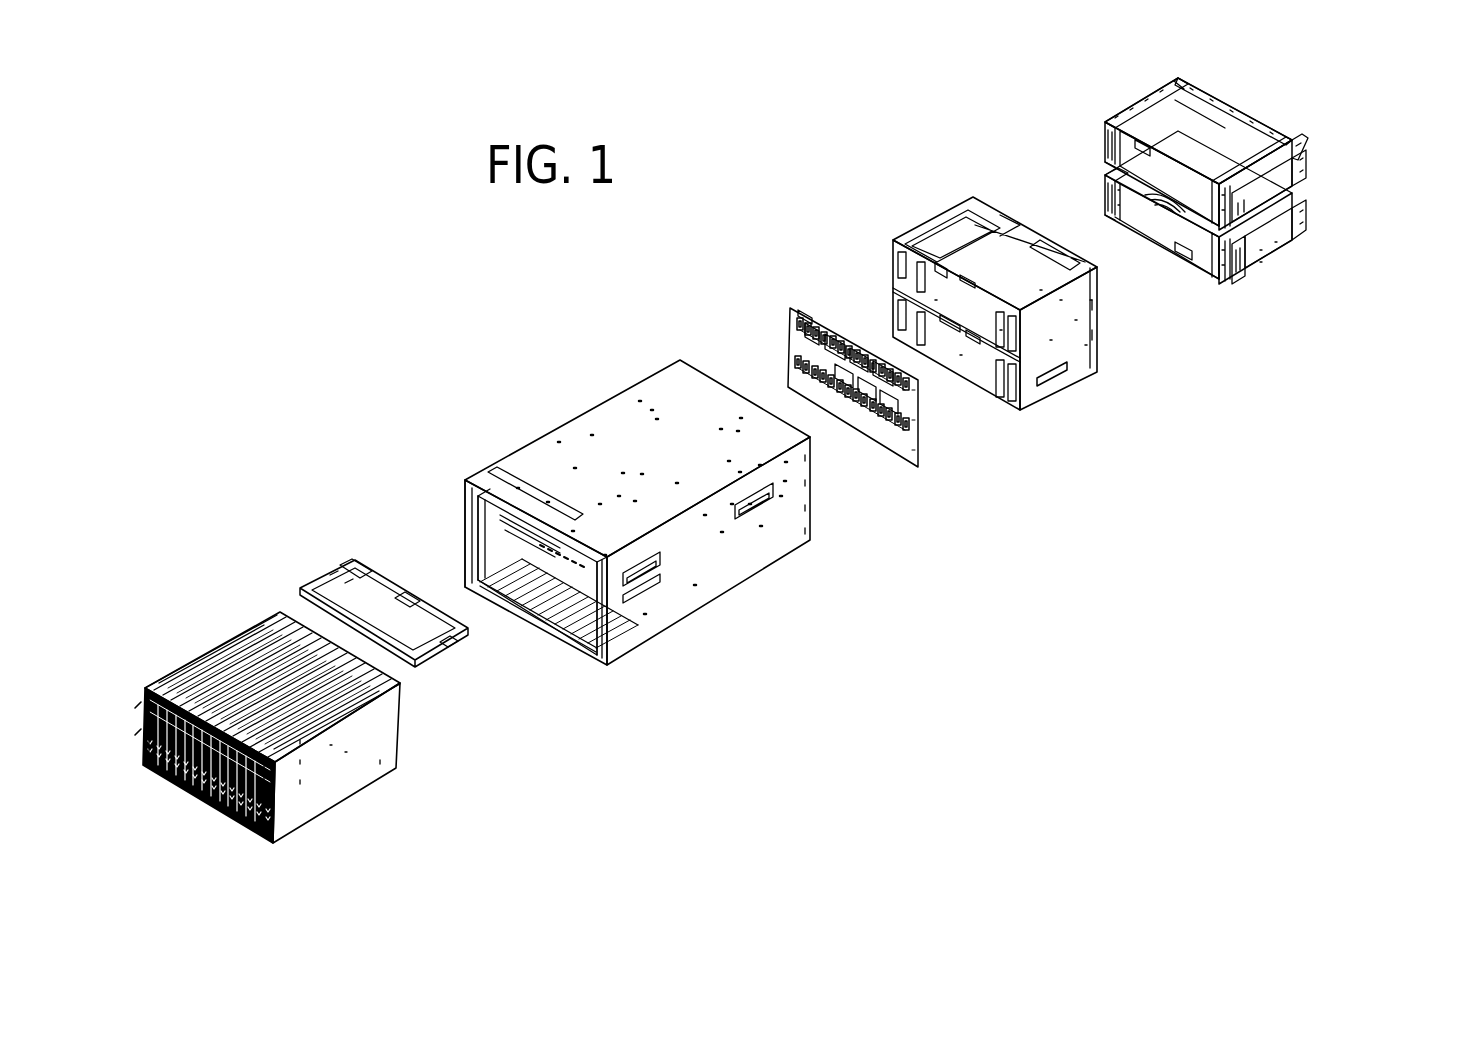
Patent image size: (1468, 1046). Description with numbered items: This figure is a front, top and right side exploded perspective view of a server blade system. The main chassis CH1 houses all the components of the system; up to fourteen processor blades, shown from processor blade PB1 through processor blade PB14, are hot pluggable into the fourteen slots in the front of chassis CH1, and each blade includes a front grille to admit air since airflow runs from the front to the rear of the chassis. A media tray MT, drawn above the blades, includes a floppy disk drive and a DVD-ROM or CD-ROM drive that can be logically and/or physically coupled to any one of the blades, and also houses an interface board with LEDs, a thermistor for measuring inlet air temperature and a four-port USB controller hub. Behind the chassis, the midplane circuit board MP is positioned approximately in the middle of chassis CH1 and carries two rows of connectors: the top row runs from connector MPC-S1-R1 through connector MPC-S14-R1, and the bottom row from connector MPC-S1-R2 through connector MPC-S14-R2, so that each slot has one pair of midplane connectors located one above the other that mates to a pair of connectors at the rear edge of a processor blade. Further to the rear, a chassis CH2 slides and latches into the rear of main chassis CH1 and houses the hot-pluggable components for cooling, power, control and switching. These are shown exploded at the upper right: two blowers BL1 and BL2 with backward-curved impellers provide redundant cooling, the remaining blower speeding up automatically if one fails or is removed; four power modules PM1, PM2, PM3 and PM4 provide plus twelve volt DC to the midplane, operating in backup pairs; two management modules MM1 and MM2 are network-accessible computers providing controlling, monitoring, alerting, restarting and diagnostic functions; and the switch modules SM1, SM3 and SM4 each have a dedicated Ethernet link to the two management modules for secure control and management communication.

The processor blade PB1 is at (225, 652).
The processor blade PB14 is at (310, 787).
The media tray MT is at (327, 570).
The main chassis CH1 is at (553, 438).
The midplane circuit board MP is at (875, 339).
The midplane connector MPC-S1-R1 is at (788, 327).
The midplane connector MPC-S1-R2 is at (785, 373).
The midplane connector MPC-S14-R1 is at (872, 350).
The midplane connector MPC-S14-R2 is at (905, 445).
The chassis CH2 is at (937, 218).
The management module MM1 is at (1183, 80).
The management module MM2 is at (1117, 212).
The power module PM1 is at (1198, 83).
The power module PM2 is at (1117, 220).
The power module PM3 is at (1280, 132).
The power module PM4 is at (1198, 263).
The blower BL1 is at (1237, 118).
The blower BL2 is at (1148, 217).
The switch module SM1 is at (1300, 137).
The switch module SM3 is at (1302, 167).
The switch module SM4 is at (1280, 240).